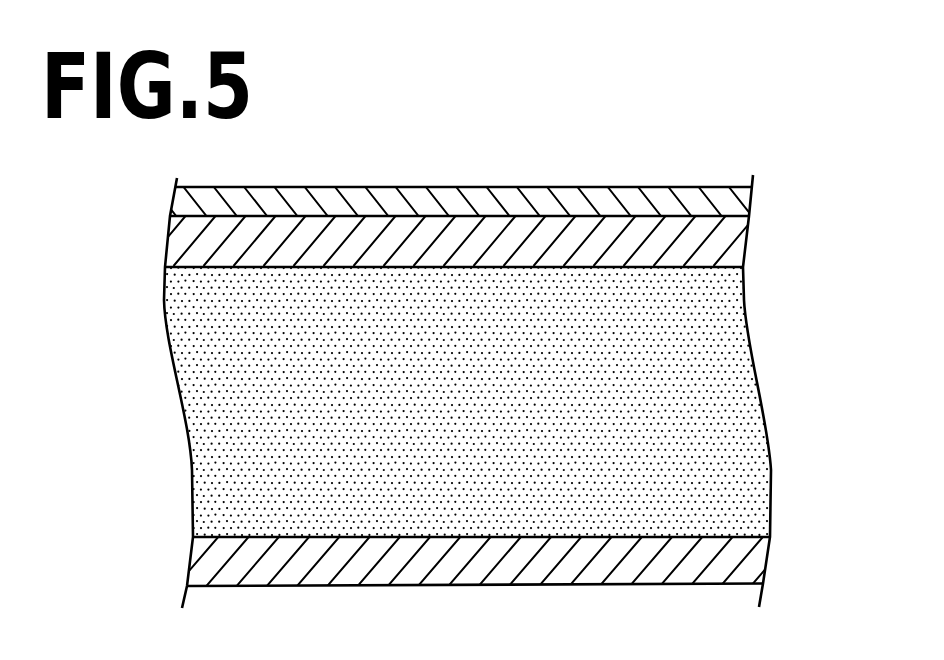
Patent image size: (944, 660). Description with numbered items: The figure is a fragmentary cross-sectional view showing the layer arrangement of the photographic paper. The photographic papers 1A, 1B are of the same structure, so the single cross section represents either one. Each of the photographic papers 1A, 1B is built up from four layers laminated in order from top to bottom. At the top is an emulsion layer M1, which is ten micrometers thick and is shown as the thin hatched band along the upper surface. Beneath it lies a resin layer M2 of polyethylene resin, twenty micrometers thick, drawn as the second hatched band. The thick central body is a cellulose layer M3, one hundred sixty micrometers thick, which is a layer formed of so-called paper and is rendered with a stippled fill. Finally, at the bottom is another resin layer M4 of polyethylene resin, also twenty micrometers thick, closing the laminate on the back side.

The photographic paper 1A is at (516, 319).
The photographic paper 1B is at (516, 319).
The emulsion layer M1 is at (733, 203).
The resin layer M2 is at (733, 232).
The cellulose layer M3 is at (745, 408).
The resin layer M4 is at (752, 560).